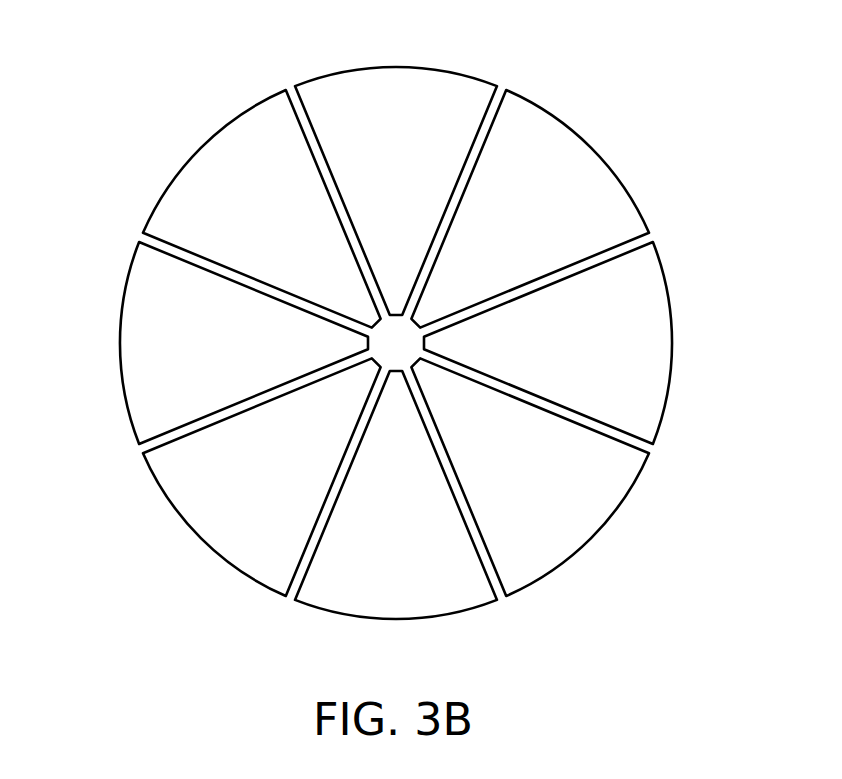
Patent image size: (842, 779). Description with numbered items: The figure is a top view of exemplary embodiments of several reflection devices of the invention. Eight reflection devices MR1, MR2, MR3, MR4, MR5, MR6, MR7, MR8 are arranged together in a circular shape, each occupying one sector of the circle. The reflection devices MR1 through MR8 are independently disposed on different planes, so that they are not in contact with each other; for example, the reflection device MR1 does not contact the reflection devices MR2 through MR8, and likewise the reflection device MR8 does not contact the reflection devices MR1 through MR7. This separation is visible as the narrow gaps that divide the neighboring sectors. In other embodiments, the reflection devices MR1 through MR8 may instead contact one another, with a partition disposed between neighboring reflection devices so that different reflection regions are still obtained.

The reflection device MR1 is at (582, 158).
The reflection device MR2 is at (660, 348).
The reflection device MR3 is at (580, 528).
The reflection device MR4 is at (394, 608).
The reflection device MR5 is at (206, 528).
The reflection device MR6 is at (128, 340).
The reflection device MR7 is at (211, 156).
The reflection device MR8 is at (399, 80).